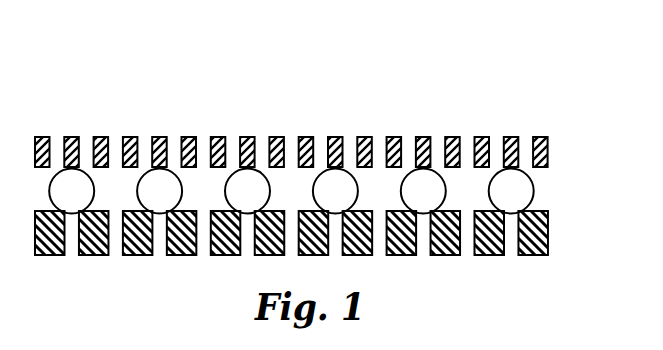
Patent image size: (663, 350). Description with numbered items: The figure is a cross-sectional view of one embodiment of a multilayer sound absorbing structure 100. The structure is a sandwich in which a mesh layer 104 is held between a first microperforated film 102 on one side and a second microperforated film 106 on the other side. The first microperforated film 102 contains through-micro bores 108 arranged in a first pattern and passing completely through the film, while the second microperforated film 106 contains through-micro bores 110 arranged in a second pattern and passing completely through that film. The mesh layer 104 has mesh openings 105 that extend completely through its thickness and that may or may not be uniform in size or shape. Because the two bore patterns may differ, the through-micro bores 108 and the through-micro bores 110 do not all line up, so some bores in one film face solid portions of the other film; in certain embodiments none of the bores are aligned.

The multilayer sound absorbing structure 100 is at (328, 164).
The first microperforated film 102 is at (544, 134).
The mesh layer 104 is at (527, 192).
The mesh openings 105 is at (118, 185).
The second microperforated film 106 is at (531, 254).
The through-micro bores 108 is at (497, 137).
The through-micro bores 110 is at (467, 247).